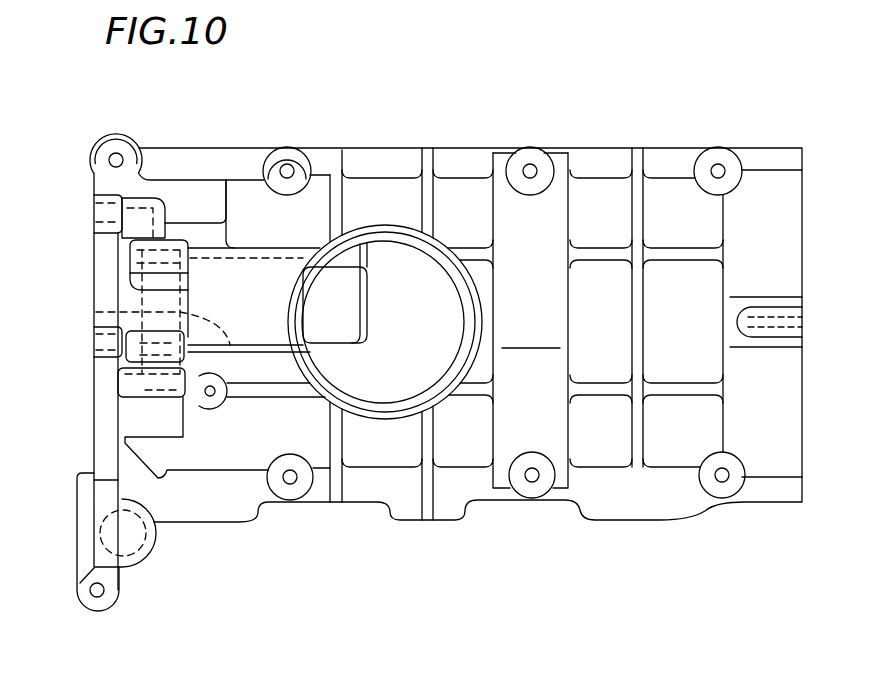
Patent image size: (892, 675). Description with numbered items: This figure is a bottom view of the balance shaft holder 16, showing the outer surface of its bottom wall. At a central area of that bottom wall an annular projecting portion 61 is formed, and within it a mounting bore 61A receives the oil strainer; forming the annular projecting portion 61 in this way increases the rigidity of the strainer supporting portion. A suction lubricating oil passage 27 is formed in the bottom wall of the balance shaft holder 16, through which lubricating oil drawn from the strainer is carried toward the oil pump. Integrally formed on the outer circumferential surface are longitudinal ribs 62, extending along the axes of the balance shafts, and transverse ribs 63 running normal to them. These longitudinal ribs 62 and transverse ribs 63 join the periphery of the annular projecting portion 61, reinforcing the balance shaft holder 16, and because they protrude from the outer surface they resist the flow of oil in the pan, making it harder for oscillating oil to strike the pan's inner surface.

The balance shaft holder 16 is at (675, 160).
The suction lubricating oil passage 27 is at (92, 313).
The annular projecting portion 61 is at (303, 360).
The mounting bore 61A is at (358, 400).
The longitudinal ribs 62 is at (483, 255).
The transverse ribs 63 is at (337, 210).